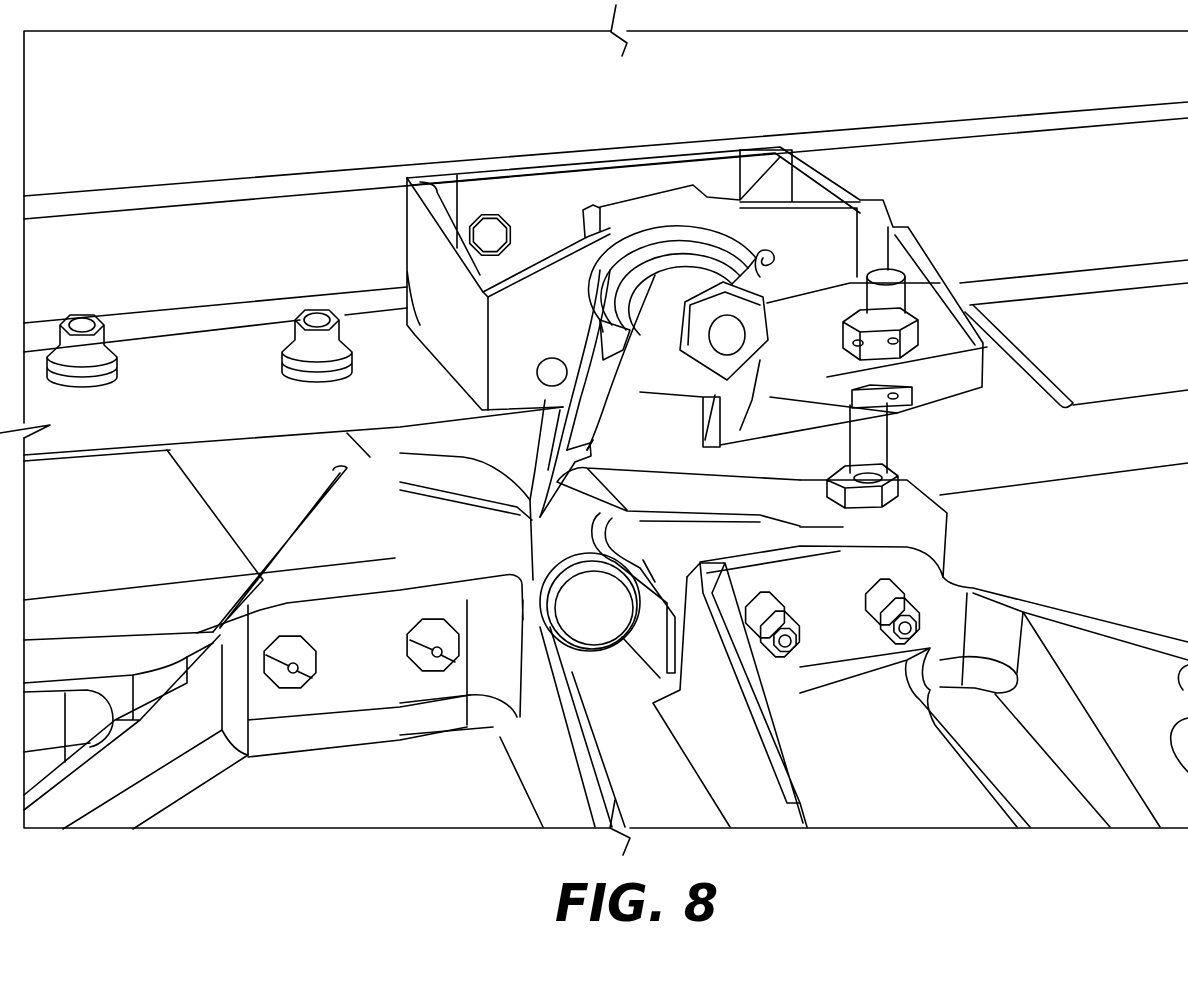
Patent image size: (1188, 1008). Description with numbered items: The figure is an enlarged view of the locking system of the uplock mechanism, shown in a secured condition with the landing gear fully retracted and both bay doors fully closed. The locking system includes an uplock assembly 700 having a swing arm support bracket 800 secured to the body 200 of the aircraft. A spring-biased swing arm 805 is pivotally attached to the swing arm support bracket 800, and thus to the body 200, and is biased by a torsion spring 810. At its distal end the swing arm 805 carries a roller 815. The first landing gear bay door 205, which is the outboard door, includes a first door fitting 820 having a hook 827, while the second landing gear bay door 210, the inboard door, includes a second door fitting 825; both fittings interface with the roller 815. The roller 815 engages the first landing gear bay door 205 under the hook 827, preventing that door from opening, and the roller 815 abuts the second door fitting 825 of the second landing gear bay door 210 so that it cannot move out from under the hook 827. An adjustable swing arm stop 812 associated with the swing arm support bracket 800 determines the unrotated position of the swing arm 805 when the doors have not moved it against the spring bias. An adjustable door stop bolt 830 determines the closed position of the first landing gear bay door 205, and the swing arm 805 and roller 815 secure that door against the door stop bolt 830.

The body 200 is at (1001, 202).
The first landing gear bay door 205 is at (870, 739).
The second landing gear bay door 210 is at (394, 792).
The uplock assembly 700 is at (338, 230).
The swing arm support bracket 800 is at (415, 236).
The swing arm 805 is at (595, 387).
The torsion spring 810 is at (665, 258).
The adjustable swing arm stop 812 is at (768, 387).
The roller 815 is at (557, 547).
The first door fitting 820 is at (743, 498).
The second door fitting 825 is at (333, 533).
The hook 827 is at (645, 625).
The adjustable door stop bolt 830 is at (872, 460).